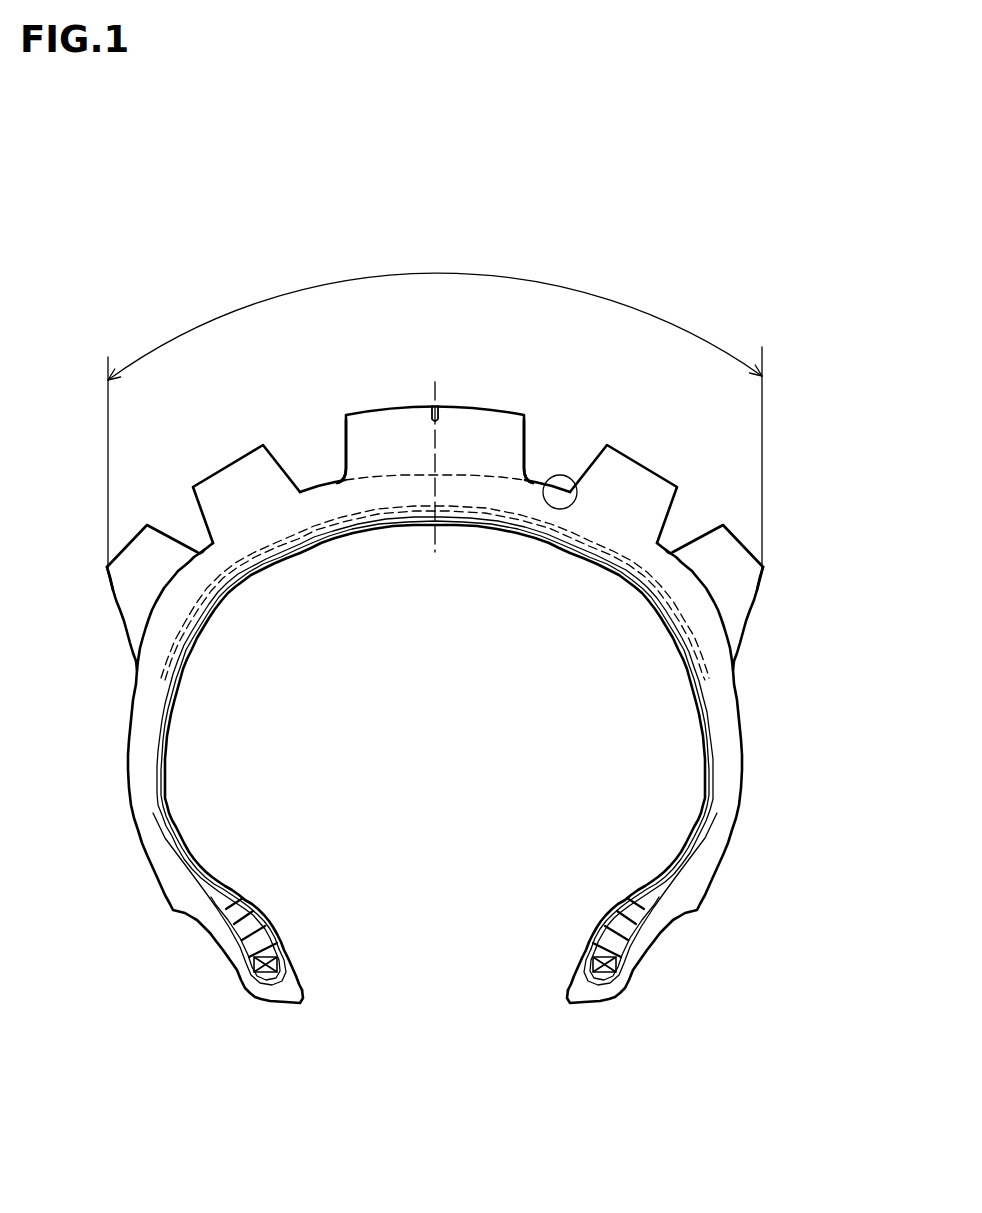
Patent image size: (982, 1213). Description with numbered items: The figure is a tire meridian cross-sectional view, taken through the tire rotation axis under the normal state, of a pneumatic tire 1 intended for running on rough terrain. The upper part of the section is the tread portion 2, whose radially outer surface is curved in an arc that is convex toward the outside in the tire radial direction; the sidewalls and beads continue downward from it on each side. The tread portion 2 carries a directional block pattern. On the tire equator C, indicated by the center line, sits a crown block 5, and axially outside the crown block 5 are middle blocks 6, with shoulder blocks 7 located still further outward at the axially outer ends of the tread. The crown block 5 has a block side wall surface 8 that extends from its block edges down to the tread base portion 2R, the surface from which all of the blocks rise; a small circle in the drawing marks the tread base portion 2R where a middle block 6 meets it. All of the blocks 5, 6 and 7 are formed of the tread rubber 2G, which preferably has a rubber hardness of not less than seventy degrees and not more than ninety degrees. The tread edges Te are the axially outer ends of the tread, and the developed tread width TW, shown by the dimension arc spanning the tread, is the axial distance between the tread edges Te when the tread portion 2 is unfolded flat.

The pneumatic tire 1 is at (770, 285).
The tread portion 2 is at (701, 288).
The crown block 5 is at (383, 410).
The middle block 6 is at (227, 465).
The shoulder block 7 is at (133, 540).
The block side wall surface 8 is at (477, 437).
The tread base portion 2R is at (556, 509).
The tread rubber 2G is at (673, 585).
The developed tread width TW is at (435, 400).
The tread edge Te is at (108, 567).
The tire equator C is at (435, 451).